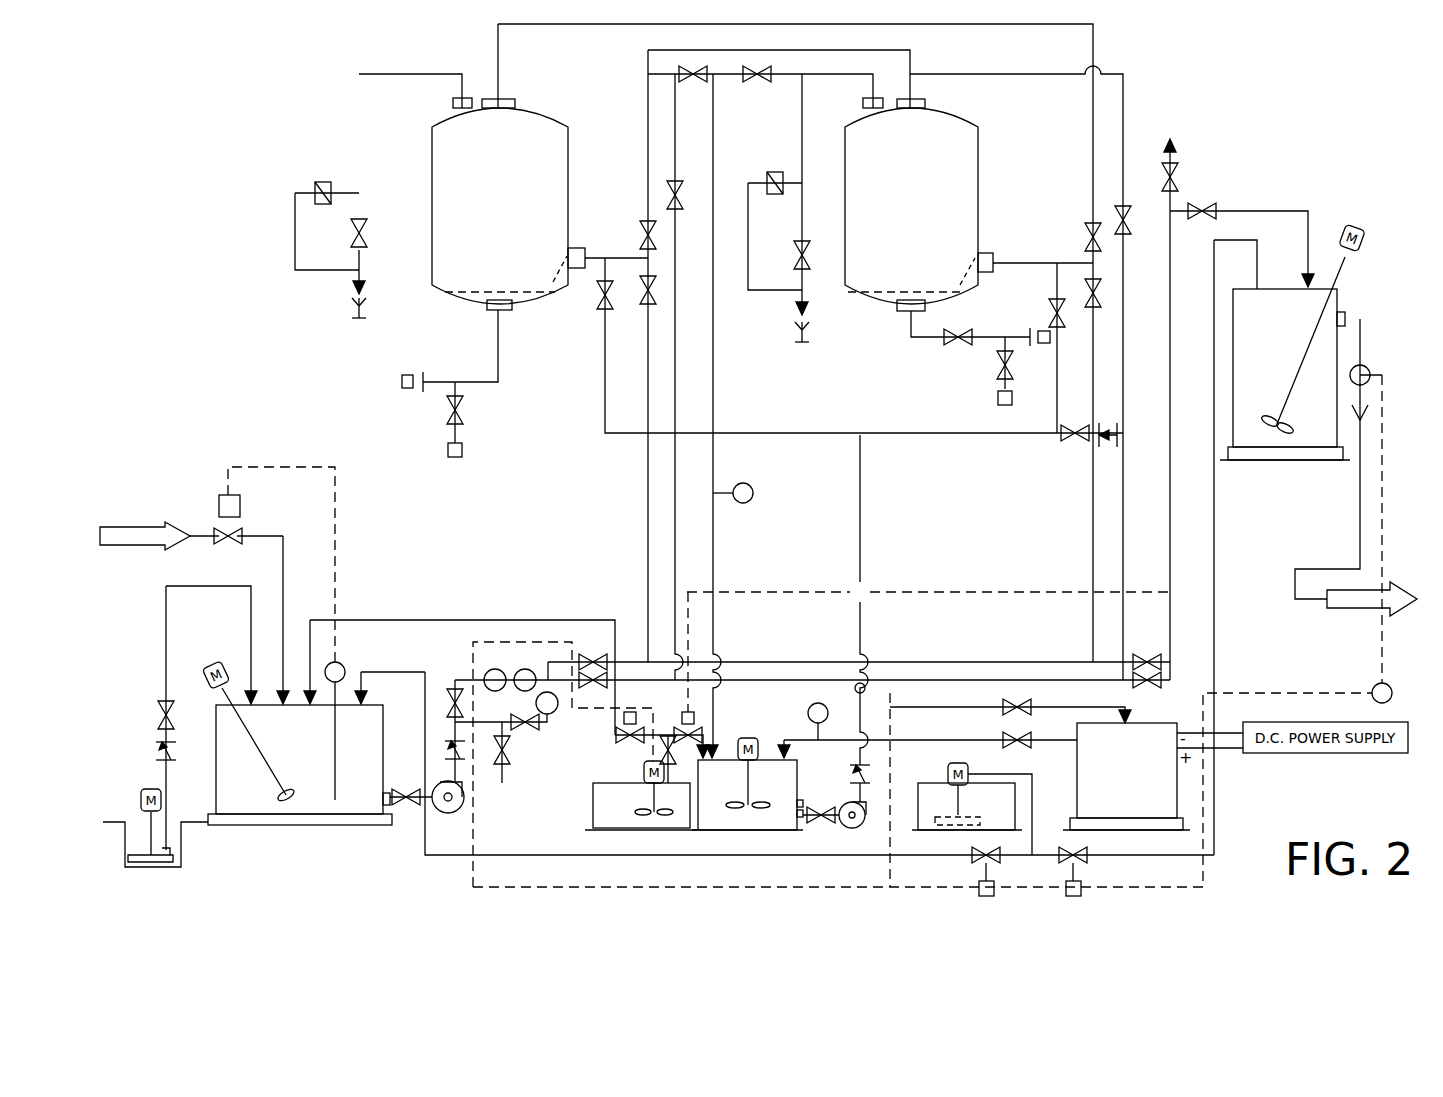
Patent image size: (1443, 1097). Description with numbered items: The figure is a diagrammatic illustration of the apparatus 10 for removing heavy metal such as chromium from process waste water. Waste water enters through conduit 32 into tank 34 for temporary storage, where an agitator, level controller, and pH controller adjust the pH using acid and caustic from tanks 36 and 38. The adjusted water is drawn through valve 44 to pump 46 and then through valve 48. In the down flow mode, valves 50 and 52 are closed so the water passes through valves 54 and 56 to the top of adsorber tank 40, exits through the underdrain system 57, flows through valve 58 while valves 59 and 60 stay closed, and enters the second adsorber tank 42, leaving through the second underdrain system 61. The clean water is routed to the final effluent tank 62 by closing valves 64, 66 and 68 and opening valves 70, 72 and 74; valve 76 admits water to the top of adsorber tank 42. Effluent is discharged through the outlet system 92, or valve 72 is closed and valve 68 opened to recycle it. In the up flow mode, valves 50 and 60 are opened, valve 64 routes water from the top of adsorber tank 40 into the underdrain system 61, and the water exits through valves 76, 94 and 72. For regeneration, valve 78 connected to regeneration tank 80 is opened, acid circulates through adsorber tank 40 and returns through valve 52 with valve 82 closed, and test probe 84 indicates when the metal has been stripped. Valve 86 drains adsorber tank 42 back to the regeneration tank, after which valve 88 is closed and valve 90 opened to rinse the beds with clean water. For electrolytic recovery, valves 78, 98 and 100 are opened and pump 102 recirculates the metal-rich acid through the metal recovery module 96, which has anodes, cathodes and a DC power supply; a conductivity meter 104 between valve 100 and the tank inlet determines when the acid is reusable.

The apparatus 10 is at (270, 168).
The conduit 32 is at (222, 530).
The tank 34 is at (308, 746).
The tank 36 is at (593, 810).
The tank 38 is at (990, 828).
The adsorber tank 40 is at (512, 267).
The adsorber tank 42 is at (924, 267).
The valve 44 is at (410, 795).
The pump 46 is at (450, 813).
The valve 48 is at (449, 702).
The valve 50 is at (593, 654).
The valve 52 is at (693, 82).
The valve 54 is at (593, 688).
The valve 56 is at (682, 208).
The underdrain system 57 is at (522, 312).
The valve 58 is at (640, 238).
The valve 59 is at (598, 300).
The valve 60 is at (641, 297).
The underdrain system 61 is at (880, 310).
The final effluent tank 62 is at (1281, 331).
The valve 64 is at (1086, 240).
The valve 66 is at (1051, 317).
The valve 68 is at (1177, 182).
The valve 70 is at (1102, 298).
The valve 72 is at (1210, 205).
The valve 74 is at (1150, 656).
The valve 76 is at (1135, 243).
The valve 78 is at (830, 810).
The regeneration tank 80 is at (738, 828).
The valve 82 is at (757, 82).
The test probe 84 is at (752, 501).
The valve 86 is at (797, 250).
The valve 88 is at (366, 240).
The valve 90 is at (1070, 443).
The outlet system 92 is at (1350, 506).
The valve 94 is at (1150, 688).
The metal recovery module 96 is at (1141, 786).
The valve 98 is at (1018, 699).
The valve 100 is at (1030, 735).
The pump 102 is at (845, 828).
The conductivity meter 104 is at (810, 708).